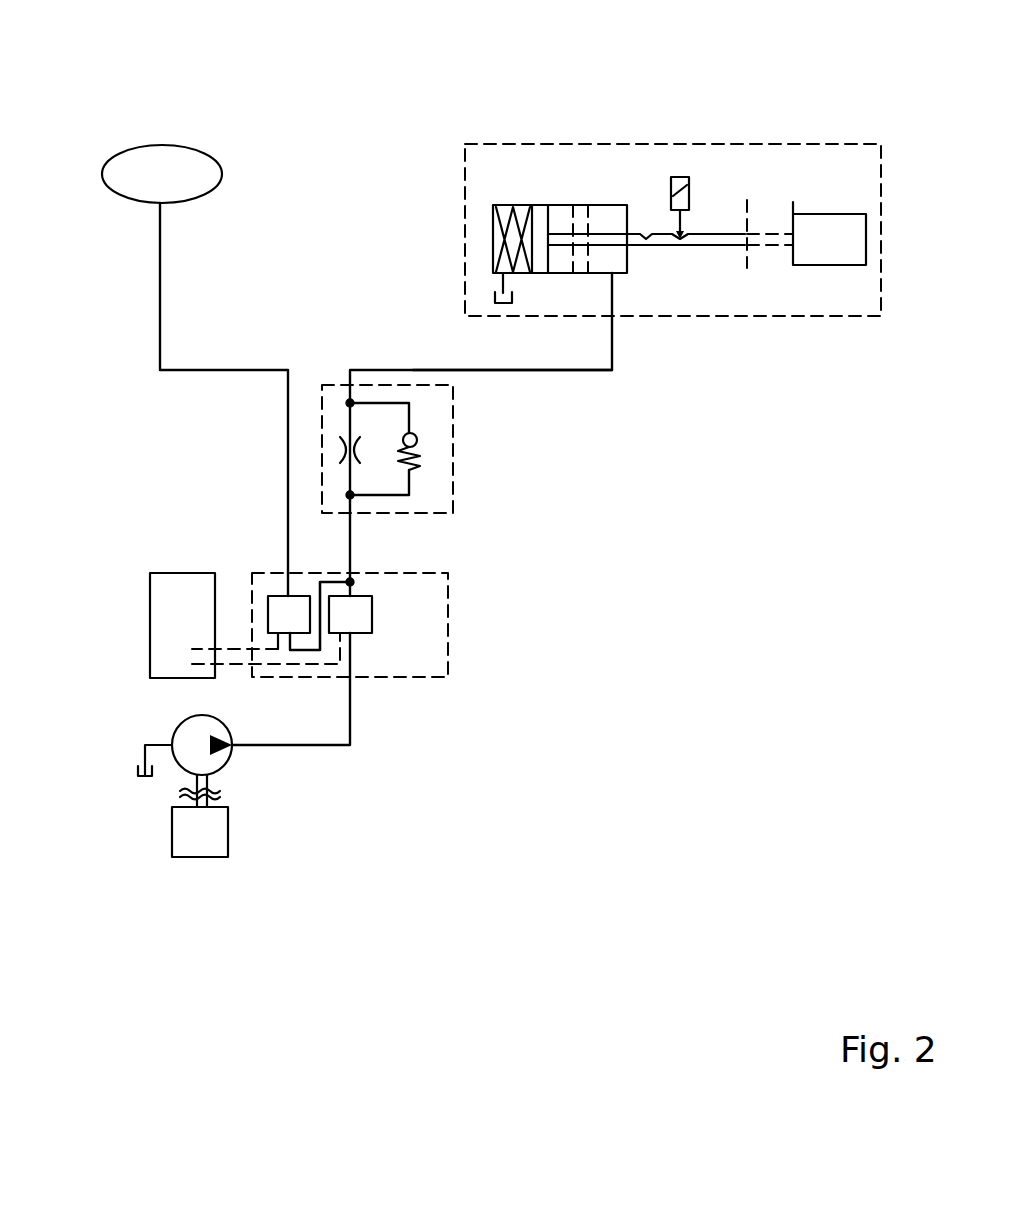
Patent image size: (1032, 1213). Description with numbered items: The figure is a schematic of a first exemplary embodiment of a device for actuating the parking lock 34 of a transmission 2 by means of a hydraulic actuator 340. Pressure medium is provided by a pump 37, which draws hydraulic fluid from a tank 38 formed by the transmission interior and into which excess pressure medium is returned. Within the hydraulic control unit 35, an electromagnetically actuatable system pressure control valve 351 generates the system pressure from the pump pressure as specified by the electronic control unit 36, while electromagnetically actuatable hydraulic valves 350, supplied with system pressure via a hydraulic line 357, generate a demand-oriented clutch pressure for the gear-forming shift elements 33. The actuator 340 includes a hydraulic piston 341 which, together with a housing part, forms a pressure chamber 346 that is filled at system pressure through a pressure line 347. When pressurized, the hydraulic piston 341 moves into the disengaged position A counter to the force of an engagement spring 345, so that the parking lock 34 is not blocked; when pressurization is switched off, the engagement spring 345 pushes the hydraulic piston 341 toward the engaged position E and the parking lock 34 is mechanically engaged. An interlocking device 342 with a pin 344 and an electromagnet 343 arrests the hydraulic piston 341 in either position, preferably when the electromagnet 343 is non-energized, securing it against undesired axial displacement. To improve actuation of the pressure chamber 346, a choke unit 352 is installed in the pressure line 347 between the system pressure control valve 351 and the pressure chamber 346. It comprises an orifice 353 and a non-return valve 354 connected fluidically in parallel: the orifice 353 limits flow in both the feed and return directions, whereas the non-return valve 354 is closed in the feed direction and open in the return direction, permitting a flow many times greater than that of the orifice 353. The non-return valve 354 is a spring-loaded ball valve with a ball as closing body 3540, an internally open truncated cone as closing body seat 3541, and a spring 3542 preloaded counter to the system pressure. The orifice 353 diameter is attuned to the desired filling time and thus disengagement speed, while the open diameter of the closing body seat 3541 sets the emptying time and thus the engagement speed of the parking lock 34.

The electric motor 2 is at (203, 843).
The shift elements 33 is at (155, 145).
The parking lock 34 is at (832, 230).
The actuator 340 is at (785, 317).
The hydraulic piston 341 is at (543, 207).
The interlocking device 342 is at (669, 183).
The electromagnet 343 is at (680, 177).
The pin 344 is at (672, 232).
The engagement spring 345 is at (517, 207).
The pressure chamber 346 is at (608, 207).
The pressure line 347 is at (413, 370).
The hydraulic control unit 35 is at (415, 620).
The hydraulic valves 350 is at (290, 622).
The system pressure control valve 351 is at (353, 622).
The choke unit 352 is at (422, 515).
The orifice 353 is at (345, 449).
The non-return valve 354 is at (426, 448).
The closing body 3540 is at (416, 436).
The closing body seat 3541 is at (418, 440).
The spring 3542 is at (425, 458).
The hydraulic line 357 is at (305, 650).
The electronic control unit 36 is at (163, 603).
The pump 37 is at (190, 737).
The tank 38 is at (137, 775).
The disengaged position A is at (747, 218).
The engaged position E is at (792, 191).